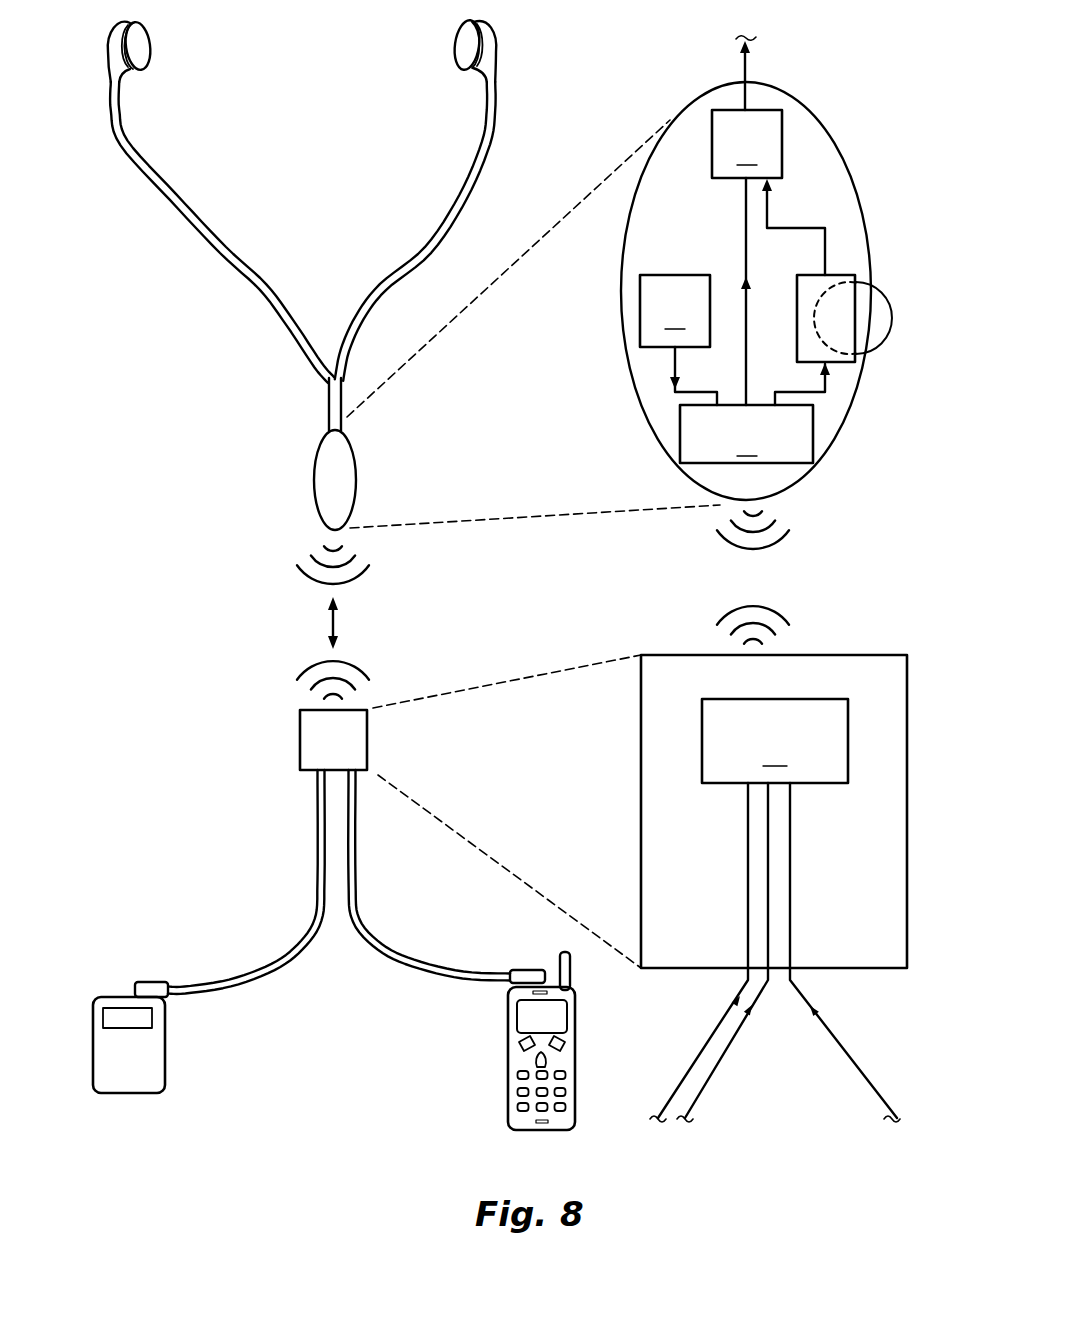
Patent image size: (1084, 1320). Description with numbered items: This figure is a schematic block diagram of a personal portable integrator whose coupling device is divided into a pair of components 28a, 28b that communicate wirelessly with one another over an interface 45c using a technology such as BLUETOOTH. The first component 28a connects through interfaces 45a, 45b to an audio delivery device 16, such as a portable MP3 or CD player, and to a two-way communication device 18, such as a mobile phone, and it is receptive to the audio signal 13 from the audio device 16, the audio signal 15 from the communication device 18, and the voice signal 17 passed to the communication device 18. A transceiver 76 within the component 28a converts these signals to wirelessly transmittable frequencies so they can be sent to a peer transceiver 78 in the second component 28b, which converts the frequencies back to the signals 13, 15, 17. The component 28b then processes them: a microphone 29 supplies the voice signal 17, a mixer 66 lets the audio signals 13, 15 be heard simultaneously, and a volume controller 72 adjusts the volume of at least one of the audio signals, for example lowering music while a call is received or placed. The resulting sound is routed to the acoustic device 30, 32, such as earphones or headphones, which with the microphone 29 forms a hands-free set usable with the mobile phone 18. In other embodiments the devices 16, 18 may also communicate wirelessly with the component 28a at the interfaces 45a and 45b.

The acoustic device 30 is at (148, 55).
The acoustic device 32 is at (456, 60).
The second coupling device component 28b is at (314, 470).
The first coupling device component 28a is at (300, 740).
The interface 45c is at (291, 568).
The interface 45a is at (315, 774).
The interface 45b is at (356, 774).
The audio delivery device 16 is at (166, 1046).
The communication device 18 is at (508, 1106).
The mixer 66 is at (747, 144).
The microphone 29 is at (675, 311).
The volume controller 72 is at (840, 272).
The peer transceiver 78 is at (746, 434).
The transceiver 76 is at (775, 741).
The voice signal 17 is at (672, 358).
The audio signal 15 is at (745, 389).
The audio signal 13 is at (790, 389).